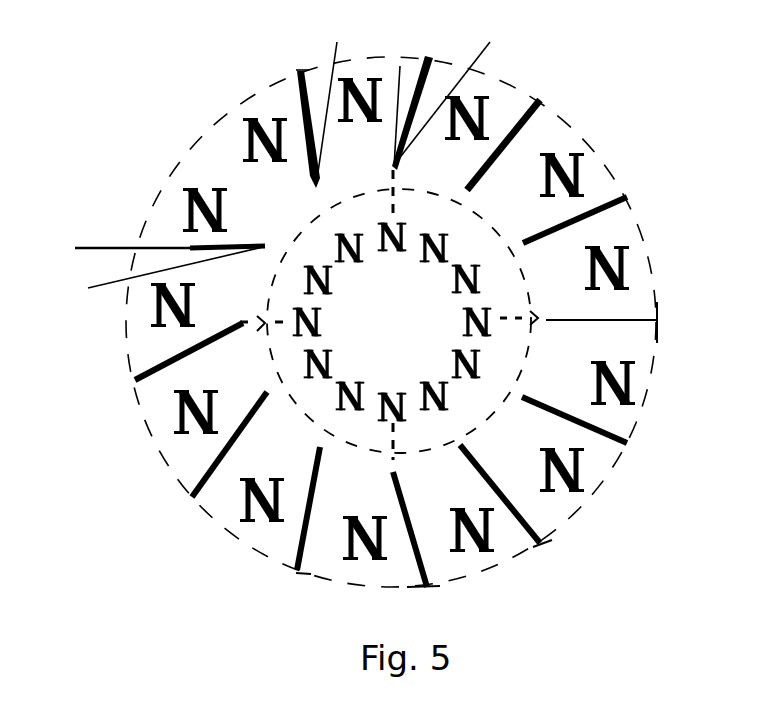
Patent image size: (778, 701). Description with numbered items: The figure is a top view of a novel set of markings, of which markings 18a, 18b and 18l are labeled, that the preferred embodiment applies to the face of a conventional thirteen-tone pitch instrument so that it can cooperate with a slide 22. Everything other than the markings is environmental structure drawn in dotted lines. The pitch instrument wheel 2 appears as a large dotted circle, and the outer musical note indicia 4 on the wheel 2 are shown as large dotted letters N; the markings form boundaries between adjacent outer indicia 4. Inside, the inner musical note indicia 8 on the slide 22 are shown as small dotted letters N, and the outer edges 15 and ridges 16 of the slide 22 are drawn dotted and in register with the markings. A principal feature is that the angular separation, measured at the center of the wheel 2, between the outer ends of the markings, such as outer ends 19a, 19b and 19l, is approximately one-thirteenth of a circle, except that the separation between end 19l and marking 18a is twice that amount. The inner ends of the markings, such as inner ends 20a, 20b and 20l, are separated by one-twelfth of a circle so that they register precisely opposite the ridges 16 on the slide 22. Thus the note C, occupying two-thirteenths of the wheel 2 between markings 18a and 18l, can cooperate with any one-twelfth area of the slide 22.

The pitch instrument wheel 2 is at (600, 155).
The outer musical note indicia 4 is at (452, 101).
The inner musical note indicia 8 is at (467, 282).
The outer edges 15 is at (265, 288).
The ridges 16 is at (262, 331).
The marking 18a is at (304, 117).
The outer end of marking 19a is at (300, 71).
The inner end of marking 20a is at (339, 101).
The marking 18b is at (400, 66).
The outer end of marking 19b is at (430, 58).
The inner end of marking 20b is at (460, 88).
The marking 18l is at (193, 248).
The outer end of marking 19l is at (113, 253).
The inner end of marking 20l is at (155, 275).
The slide 22 is at (500, 294).